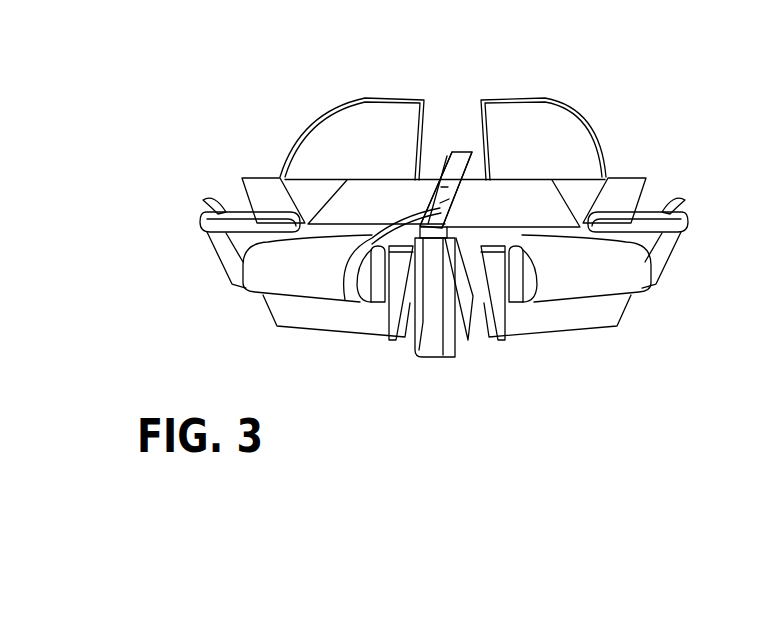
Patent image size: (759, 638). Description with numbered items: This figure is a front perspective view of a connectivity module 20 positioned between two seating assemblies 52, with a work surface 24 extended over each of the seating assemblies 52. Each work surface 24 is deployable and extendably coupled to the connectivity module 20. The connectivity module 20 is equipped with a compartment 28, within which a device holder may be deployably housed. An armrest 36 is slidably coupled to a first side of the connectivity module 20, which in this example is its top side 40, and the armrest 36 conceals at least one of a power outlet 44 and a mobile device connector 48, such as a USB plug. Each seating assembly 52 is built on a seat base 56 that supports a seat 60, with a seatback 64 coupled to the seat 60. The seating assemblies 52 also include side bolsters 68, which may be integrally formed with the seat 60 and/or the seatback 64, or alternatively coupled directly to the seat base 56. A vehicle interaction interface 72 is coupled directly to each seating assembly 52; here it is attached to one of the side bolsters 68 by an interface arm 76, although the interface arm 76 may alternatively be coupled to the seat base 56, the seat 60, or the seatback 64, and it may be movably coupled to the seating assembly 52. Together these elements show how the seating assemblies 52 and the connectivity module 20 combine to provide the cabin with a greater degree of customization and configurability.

The connectivity module 20 is at (462, 150).
The work surface 24 is at (360, 200).
The compartment 28 is at (438, 345).
The armrest 36 is at (445, 167).
The top side 40 is at (443, 210).
The power outlet 44 is at (345, 300).
The mobile device connector 48 is at (419, 360).
The seating assembly 52 is at (352, 155).
The seat base 56 is at (320, 313).
The seat 60 is at (284, 280).
The seatback 64 is at (377, 132).
The side bolster 68 is at (245, 257).
The vehicle interaction interface 72 is at (254, 168).
The interface arm 76 is at (213, 200).